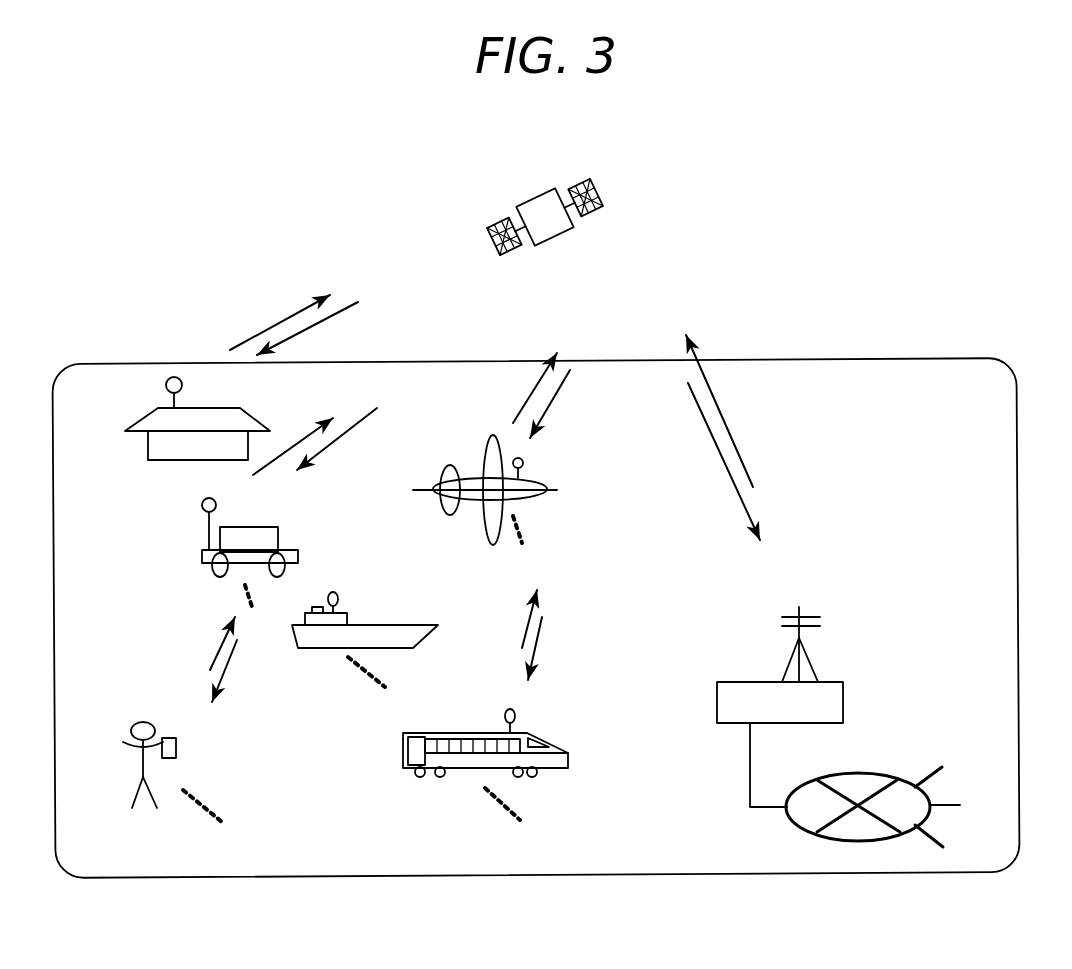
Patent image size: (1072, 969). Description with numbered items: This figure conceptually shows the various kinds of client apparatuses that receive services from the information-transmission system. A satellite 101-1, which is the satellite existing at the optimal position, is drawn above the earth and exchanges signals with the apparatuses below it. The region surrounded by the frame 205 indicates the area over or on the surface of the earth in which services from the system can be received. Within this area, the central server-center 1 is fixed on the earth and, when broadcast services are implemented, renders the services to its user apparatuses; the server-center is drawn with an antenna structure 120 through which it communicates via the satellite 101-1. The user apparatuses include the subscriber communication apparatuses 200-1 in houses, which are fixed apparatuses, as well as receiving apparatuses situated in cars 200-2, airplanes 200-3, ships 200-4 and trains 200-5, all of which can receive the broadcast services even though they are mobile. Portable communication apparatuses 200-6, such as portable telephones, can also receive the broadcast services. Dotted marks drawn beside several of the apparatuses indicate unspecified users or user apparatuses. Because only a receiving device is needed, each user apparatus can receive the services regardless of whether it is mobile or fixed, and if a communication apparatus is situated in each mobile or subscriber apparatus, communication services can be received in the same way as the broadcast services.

The satellite 101-1 is at (548, 190).
The frame 205 is at (820, 361).
The subscriber communication apparatus 200-1 is at (152, 415).
The car 200-2 is at (203, 552).
The airplane 200-3 is at (483, 458).
The ship 200-4 is at (360, 625).
The train 200-5 is at (530, 735).
The portable communication apparatus 200-6 is at (172, 737).
The central server-center 1 is at (838, 682).
The ground station antenna 120 is at (882, 773).